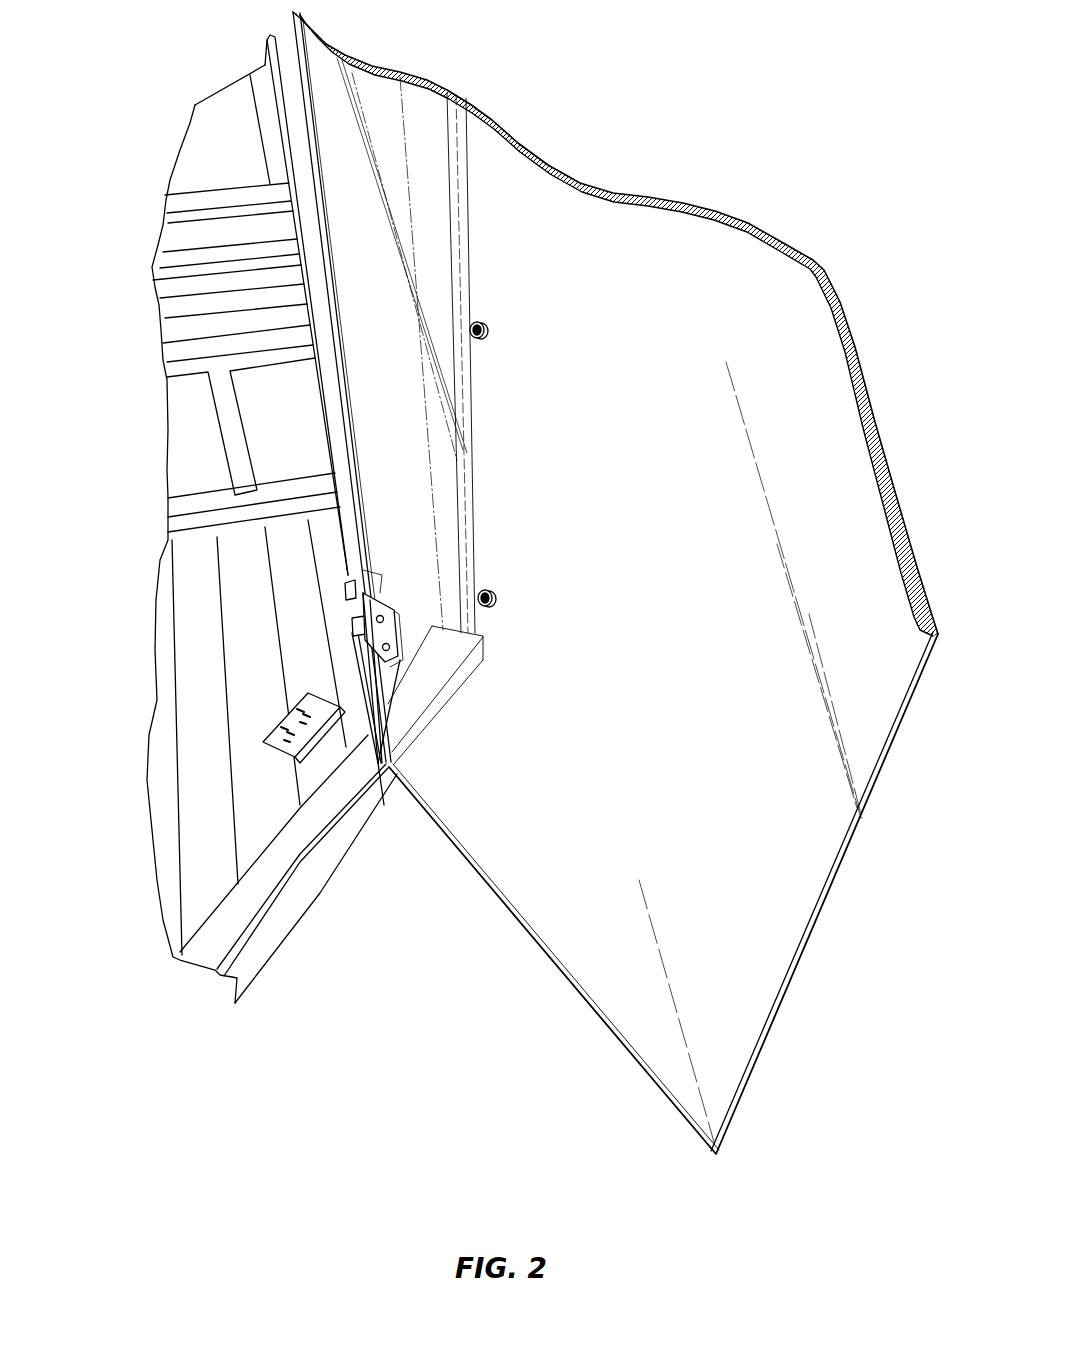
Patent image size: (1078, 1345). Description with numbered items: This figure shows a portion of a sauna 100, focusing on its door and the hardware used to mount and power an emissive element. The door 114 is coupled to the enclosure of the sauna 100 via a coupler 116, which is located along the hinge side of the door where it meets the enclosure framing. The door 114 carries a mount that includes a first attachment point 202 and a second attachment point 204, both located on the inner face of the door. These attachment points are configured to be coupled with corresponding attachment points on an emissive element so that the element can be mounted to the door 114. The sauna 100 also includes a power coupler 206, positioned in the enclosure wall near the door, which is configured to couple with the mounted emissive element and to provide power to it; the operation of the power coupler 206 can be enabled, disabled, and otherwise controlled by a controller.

The sauna 100 is at (826, 34).
The door 114 is at (673, 1067).
The coupler 116 is at (381, 763).
The first attachment point 202 is at (487, 588).
The second attachment point 204 is at (482, 322).
The power coupler 206 is at (301, 756).